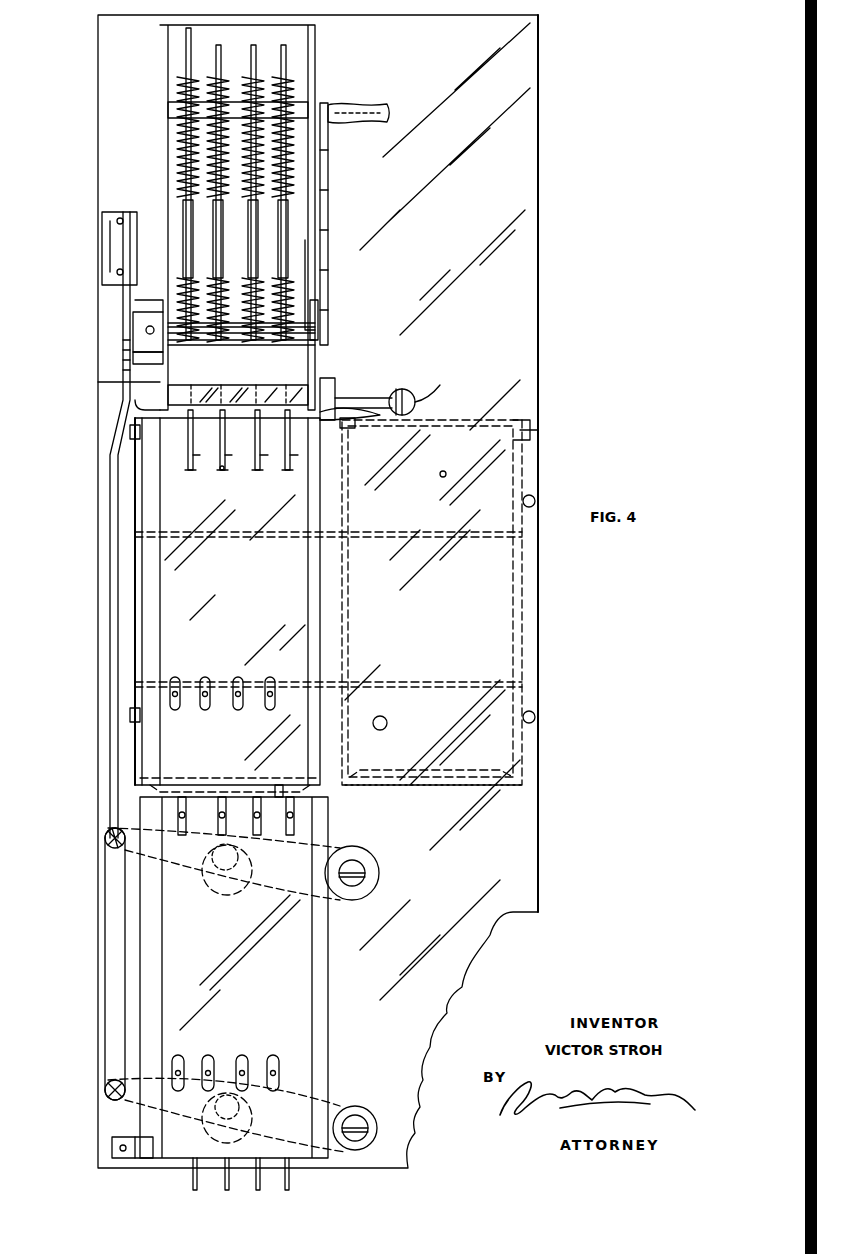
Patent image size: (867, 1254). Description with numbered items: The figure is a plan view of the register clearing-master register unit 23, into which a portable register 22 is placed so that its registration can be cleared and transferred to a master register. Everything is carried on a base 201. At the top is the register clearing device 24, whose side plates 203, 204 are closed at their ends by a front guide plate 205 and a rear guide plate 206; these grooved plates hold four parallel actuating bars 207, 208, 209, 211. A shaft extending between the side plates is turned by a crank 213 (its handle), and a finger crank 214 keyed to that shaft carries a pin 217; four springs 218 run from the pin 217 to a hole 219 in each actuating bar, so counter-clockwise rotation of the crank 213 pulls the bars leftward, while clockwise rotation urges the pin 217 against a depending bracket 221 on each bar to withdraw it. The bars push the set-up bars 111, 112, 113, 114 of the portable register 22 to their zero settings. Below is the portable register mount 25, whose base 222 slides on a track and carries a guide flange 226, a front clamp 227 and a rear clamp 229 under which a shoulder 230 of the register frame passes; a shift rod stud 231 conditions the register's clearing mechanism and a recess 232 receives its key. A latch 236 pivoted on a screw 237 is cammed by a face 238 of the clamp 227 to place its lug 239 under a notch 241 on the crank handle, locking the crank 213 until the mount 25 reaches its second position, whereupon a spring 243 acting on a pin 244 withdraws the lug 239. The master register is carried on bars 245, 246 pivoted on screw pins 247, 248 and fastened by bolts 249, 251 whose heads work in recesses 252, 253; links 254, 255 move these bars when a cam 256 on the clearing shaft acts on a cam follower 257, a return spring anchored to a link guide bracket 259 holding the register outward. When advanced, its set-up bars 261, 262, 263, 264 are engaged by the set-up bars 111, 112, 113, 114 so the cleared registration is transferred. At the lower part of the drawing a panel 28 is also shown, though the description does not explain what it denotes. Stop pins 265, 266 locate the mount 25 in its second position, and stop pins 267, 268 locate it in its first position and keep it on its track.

The portable register 22 is at (305, 612).
The register clearing-master register unit 23 is at (545, 150).
The register clearing device 24 is at (168, 122).
The portable register mount 25 is at (425, 432).
The panel 28 is at (348, 982).
The set-up bar 111 is at (288, 472).
The set-up bar 112 is at (258, 472).
The set-up bar 113 is at (223, 472).
The set-up bar 114 is at (190, 472).
The base 201 is at (538, 392).
The side plate 203 is at (168, 222).
The side plate 204 is at (328, 218).
The front guide plate 205 is at (180, 398).
The rear guide plate 206 is at (330, 104).
The actuating bar 207 is at (286, 58).
The actuating bar 208 is at (256, 56).
The actuating bar 209 is at (221, 56).
The actuating bar 211 is at (191, 52).
The crank 213 is at (315, 275).
The crank 214 is at (308, 330).
The pin 217 is at (245, 338).
The spring 218 is at (286, 190).
The hole 219 is at (221, 92).
The depending bracket 221 is at (295, 308).
The base 222 is at (445, 752).
The guide flange 226 is at (135, 610).
The front clamp 227 is at (175, 412).
The rear clamp 229 is at (165, 788).
The shoulder 230 is at (255, 790).
The shift rod stud 231 is at (440, 476).
The recess 232 is at (387, 724).
The latch 236 is at (378, 396).
The screw 237 is at (408, 390).
The face 238 is at (432, 392).
The lug 239 is at (330, 376).
The notch 241 is at (318, 355).
The spring 243 is at (345, 412).
The pin 244 is at (352, 428).
The bar 245 is at (345, 845).
The bar 246 is at (340, 1105).
The screw pin 247 is at (380, 855).
The screw pin 248 is at (365, 1122).
The bolt 249 is at (240, 856).
The bolt 251 is at (248, 1106).
The recess 252 is at (204, 862).
The recess 253 is at (213, 1107).
The link 254 is at (105, 945).
The link 255 is at (123, 548).
The cam 256 is at (133, 335).
The cam follower 257 is at (122, 260).
The link guide bracket 259 is at (123, 293).
The set-up bar 261 is at (294, 834).
The set-up bar 262 is at (260, 834).
The set-up bar 263 is at (232, 836).
The set-up bar 264 is at (190, 832).
The stop pin 265 is at (130, 432).
The stop pin 266 is at (130, 715).
The stop pin 267 is at (536, 497).
The stop pin 268 is at (535, 714).